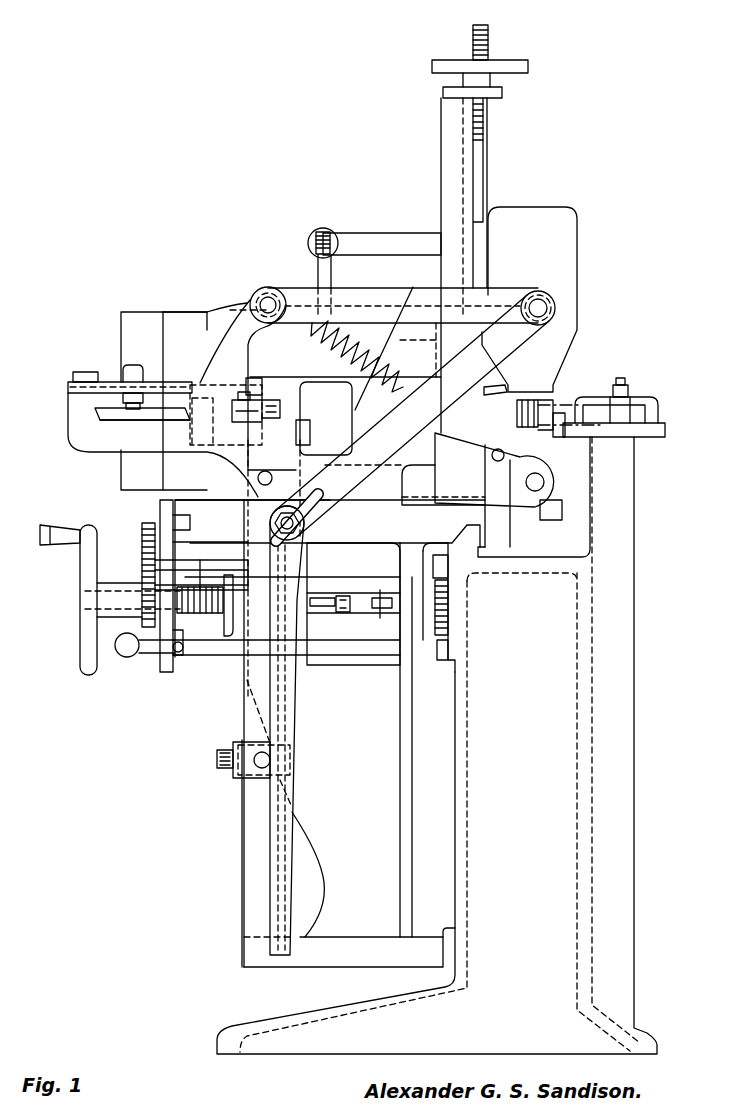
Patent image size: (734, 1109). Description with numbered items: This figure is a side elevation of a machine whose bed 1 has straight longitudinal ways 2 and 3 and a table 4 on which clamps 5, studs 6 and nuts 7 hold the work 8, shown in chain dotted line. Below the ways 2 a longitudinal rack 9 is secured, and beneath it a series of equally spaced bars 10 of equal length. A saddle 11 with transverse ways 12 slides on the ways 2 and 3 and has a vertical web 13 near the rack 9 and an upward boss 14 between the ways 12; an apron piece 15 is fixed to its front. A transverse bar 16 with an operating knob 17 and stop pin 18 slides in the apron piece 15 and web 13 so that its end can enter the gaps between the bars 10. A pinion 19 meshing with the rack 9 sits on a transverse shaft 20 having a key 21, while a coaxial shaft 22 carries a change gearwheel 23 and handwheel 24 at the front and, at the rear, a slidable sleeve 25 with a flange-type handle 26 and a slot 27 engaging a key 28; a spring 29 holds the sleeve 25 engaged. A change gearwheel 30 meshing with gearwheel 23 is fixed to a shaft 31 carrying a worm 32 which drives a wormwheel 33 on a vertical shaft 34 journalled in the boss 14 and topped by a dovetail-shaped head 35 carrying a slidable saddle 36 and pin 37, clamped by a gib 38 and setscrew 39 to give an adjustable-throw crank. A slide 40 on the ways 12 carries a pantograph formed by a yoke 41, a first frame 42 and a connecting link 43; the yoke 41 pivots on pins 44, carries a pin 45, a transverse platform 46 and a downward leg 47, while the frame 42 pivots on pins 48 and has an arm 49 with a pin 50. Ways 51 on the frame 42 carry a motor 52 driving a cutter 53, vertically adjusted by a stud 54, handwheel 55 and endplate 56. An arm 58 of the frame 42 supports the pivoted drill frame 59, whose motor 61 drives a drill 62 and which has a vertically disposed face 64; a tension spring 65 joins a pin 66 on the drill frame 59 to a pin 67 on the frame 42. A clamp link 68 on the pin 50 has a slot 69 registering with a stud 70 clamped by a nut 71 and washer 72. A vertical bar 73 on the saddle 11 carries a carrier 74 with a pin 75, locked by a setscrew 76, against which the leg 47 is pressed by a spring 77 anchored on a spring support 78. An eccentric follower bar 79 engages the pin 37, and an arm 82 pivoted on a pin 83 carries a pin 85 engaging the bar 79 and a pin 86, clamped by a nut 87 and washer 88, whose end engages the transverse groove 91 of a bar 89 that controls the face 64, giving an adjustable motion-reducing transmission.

The bed 1 is at (630, 838).
The longitudinal ways 2 is at (462, 560).
The longitudinal ways 3 is at (443, 933).
The table 4 is at (652, 428).
The clamps 5 is at (640, 395).
The studs 6 is at (625, 390).
The nuts 7 is at (619, 380).
The work 8 is at (560, 403).
The longitudinal rack 9 is at (445, 565).
The longitudinally disposed bars 10 is at (446, 650).
The saddle 11 is at (322, 806).
The transverse ways 12 is at (242, 496).
The vertical web 13 is at (413, 660).
The boss 14 is at (283, 457).
The apron piece 15 is at (166, 672).
The transverse bar 16 is at (372, 648).
The operating knob 17 is at (126, 660).
The stop pin 18 is at (177, 654).
The pinion 19 is at (447, 595).
The transverse shaft 20 is at (388, 610).
The key 21 is at (370, 625).
The transverse shaft 22 is at (193, 655).
The change gearwheel 23 is at (145, 655).
The handwheel 24 is at (86, 665).
The slidable sleeve 25 is at (244, 660).
The flange-type handle 26 is at (228, 636).
The slot 27 is at (318, 607).
The key 28 is at (336, 610).
The spring 29 is at (196, 614).
The change gearwheel 30 is at (142, 525).
The transverse shaft 31 is at (180, 570).
The worm 32 is at (157, 562).
The wormwheel 33 is at (172, 520).
The vertical shaft 34 is at (262, 516).
The dovetail-shaped head 35 is at (244, 423).
The slidable saddle 36 is at (226, 415).
The pin 37 is at (280, 409).
The gib 38 is at (300, 425).
The setscrew 39 is at (310, 436).
The slide 40 is at (434, 480).
The yoke 41 is at (236, 318).
The first frame 42 is at (448, 340).
The connecting link 43 is at (375, 305).
The pins 44 is at (257, 477).
The pin 45 is at (262, 298).
The transverse platform 46 is at (90, 440).
The leg 47 is at (290, 846).
The pins 48 is at (545, 480).
The arm 49 is at (540, 296).
The pin 50 is at (556, 298).
The ways 51 is at (465, 170).
The motor 52 is at (560, 243).
The cutter 53 is at (540, 400).
The stud 54 is at (488, 35).
The handwheel 55 is at (528, 65).
The endplate 56 is at (502, 92).
The arm 58 is at (548, 520).
The drill frame 59 is at (190, 318).
The motor 61 is at (368, 362).
The drill 62 is at (492, 387).
The vertically disposed face 64 is at (138, 318).
The tension spring 65 is at (323, 228).
The pin 66 is at (318, 268).
The pin 67 is at (388, 240).
The clamp link 68 is at (372, 455).
The slot 69 is at (320, 500).
The stud 70 is at (296, 526).
The nut 71 is at (300, 521).
The washer 72 is at (300, 530).
The vertical bar 73 is at (262, 800).
The carrier 74 is at (240, 768).
The pin 75 is at (270, 758).
The setscrew 76 is at (217, 760).
The spring 77 is at (391, 337).
The spring support 78 is at (500, 470).
The bar 79 is at (241, 392).
The arm 82 is at (165, 380).
The pin 83 is at (78, 380).
The pin 85 is at (256, 380).
The pin 86 is at (100, 410).
The nut 87 is at (128, 366).
The washer 88 is at (125, 383).
The bar 89 is at (160, 420).
The transverse groove 91 is at (140, 378).